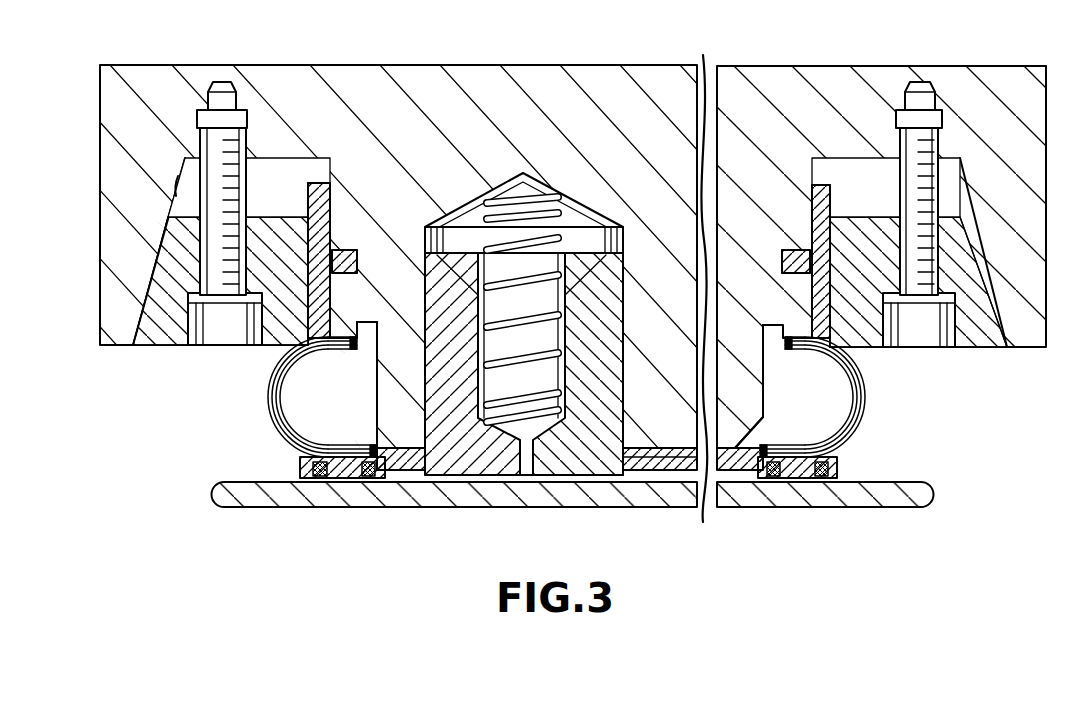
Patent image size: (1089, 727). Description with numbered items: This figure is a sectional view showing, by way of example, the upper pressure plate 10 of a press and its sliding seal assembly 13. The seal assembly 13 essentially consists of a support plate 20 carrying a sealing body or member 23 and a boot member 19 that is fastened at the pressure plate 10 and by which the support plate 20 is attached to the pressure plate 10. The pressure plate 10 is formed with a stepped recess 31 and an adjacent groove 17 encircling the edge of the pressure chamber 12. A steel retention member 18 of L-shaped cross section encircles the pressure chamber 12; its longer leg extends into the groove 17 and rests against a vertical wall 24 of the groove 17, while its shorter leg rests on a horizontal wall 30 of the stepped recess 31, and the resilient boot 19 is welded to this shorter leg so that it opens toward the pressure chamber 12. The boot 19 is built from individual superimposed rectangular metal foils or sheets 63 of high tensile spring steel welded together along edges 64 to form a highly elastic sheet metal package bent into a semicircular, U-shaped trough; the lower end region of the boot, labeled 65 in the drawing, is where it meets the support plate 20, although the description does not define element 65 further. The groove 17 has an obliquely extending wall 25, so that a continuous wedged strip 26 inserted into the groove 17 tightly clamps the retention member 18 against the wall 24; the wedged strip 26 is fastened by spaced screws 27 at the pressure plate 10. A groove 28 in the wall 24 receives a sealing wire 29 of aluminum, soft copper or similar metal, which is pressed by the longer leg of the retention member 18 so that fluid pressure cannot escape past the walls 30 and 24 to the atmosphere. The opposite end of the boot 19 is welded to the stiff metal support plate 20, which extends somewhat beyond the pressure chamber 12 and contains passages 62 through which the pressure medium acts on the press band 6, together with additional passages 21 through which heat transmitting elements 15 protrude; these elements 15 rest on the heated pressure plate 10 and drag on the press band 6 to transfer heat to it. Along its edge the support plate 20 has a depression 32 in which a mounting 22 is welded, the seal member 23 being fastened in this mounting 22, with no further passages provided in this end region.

The upper pressure plate 10 is at (150, 70).
The groove 17 is at (185, 178).
The wall 25 is at (176, 190).
The wedged strip 26 is at (176, 233).
The vertical wall 24 is at (330, 164).
The retention member 18 is at (310, 192).
The sealing wire 29 is at (345, 251).
The groove 28 is at (358, 262).
The horizontal wall 30 is at (378, 330).
The screws 27 is at (207, 335).
The boot 19 is at (270, 372).
The seal assembly 13 is at (250, 407).
The stepped recess 31 is at (348, 352).
The tube lower end 65 is at (357, 445).
The depression 32 is at (328, 462).
The support plate 20 is at (300, 462).
The mounting 22 is at (318, 478).
The sealing body 23 is at (342, 478).
The passages 21 is at (418, 470).
The press band 6 is at (485, 496).
The heat transmitting elements 15 is at (560, 468).
The pressure chamber 12 is at (672, 470).
The passages 62 is at (740, 470).
The edges 64 is at (770, 336).
The metal foils or sheets 63 is at (850, 395).